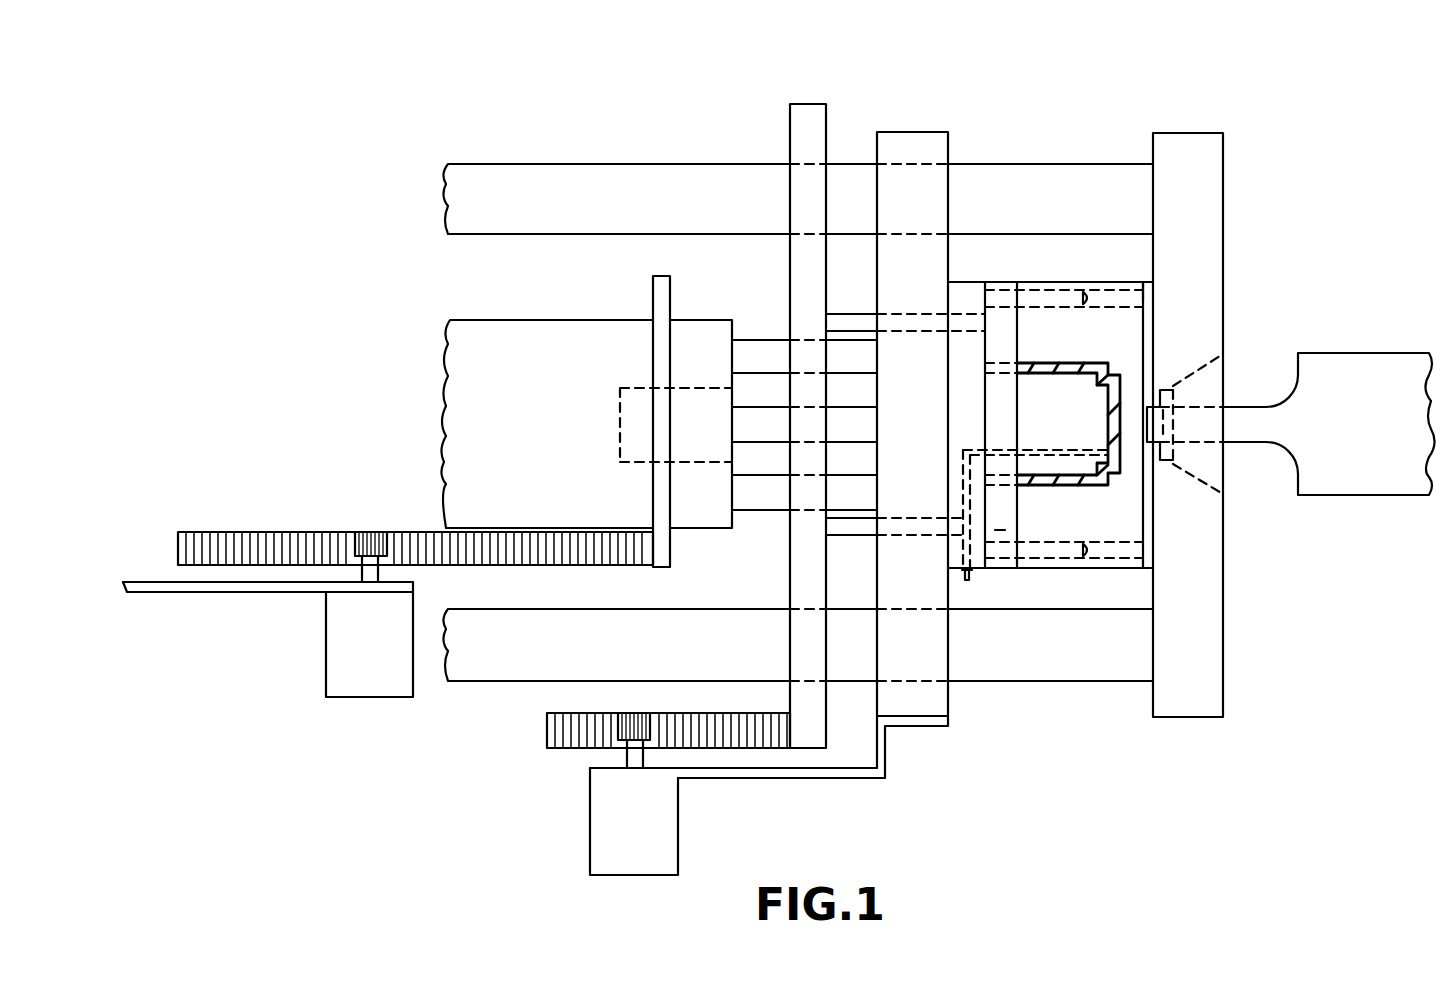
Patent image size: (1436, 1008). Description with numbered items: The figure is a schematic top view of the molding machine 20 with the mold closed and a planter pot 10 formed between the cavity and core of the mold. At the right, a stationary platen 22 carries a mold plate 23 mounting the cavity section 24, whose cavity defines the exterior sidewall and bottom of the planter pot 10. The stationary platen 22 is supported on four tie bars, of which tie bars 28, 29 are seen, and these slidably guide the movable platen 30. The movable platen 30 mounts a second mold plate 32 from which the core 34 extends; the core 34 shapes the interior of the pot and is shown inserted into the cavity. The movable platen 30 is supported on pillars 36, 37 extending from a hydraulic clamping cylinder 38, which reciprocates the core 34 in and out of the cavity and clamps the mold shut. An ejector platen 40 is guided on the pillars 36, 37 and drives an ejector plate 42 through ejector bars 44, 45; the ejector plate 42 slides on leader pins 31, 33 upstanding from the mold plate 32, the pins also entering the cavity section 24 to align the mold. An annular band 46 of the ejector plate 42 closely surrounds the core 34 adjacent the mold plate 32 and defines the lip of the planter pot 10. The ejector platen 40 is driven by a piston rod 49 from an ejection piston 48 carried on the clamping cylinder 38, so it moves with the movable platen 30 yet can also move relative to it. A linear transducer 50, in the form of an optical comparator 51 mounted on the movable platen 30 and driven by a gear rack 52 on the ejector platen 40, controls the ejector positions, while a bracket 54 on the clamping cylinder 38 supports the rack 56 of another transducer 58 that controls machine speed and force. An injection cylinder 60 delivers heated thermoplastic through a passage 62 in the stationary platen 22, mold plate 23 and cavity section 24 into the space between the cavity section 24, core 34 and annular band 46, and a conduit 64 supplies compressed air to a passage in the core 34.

The planter pot 10 is at (1093, 367).
The molding machine 20 is at (622, 128).
The stationary platen 22 is at (1210, 132).
The mold plate 23 is at (1146, 288).
The cavity section 24 is at (1108, 280).
The tie bar 28 is at (978, 188).
The tie bar 29 is at (1107, 666).
The movable platen 30 is at (898, 132).
The leader pin 31 is at (1057, 302).
The second mold plate 32 is at (978, 282).
The leader pin 33 is at (1053, 547).
The core 34 is at (1083, 403).
The pillar 36 is at (763, 352).
The pillar 37 is at (743, 495).
The hydraulic clamping cylinder 38 is at (468, 338).
The ejector platen 40 is at (807, 103).
The ejector plate 42 is at (995, 530).
The ejector bar 44 is at (862, 325).
The ejector bar 45 is at (838, 528).
The annular band 46 is at (1000, 485).
The ejection piston 48 is at (622, 390).
The piston rod 49 is at (760, 422).
The linear transducer 50 is at (580, 778).
The optical comparator 51 is at (658, 833).
The gear rack 52 is at (563, 728).
The bracket 54 is at (660, 548).
The rack 56 is at (232, 540).
The transducer 58 is at (312, 610).
The injection cylinder 60 is at (1355, 474).
The passage 62 is at (1137, 403).
The conduit 64 is at (967, 572).